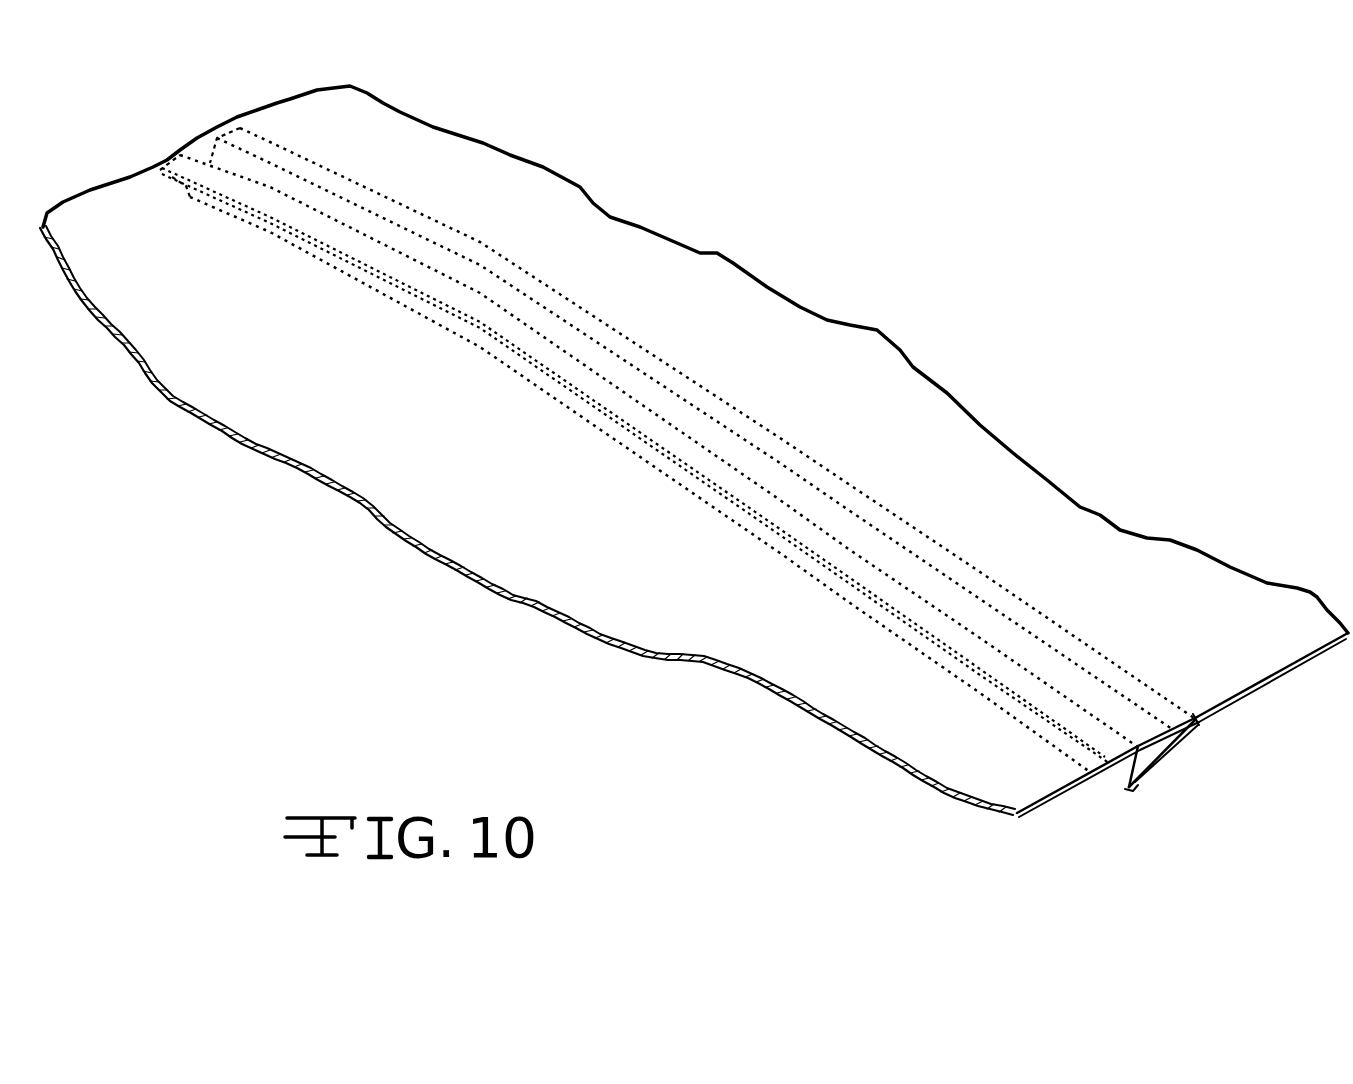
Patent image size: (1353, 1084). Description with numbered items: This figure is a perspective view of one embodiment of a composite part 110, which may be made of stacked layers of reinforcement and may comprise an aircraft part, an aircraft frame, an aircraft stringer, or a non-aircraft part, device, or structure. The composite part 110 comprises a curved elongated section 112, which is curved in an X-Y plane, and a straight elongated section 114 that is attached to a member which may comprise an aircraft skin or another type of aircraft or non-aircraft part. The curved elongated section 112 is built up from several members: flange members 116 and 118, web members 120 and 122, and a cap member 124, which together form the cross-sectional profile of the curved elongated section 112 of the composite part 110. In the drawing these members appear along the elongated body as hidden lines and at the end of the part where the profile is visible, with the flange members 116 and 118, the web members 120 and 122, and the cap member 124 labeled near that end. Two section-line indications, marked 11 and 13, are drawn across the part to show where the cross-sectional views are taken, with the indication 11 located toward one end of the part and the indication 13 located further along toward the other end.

The section line 11- 11 is at (390, 363).
The section line 13- 13 is at (902, 688).
The composite part 110 is at (730, 520).
The curved elongated section 112 is at (583, 297).
The straight elongated section 114 is at (897, 530).
The flange member 116 is at (1080, 717).
The flange member 118 is at (1125, 683).
The web member 120 is at (1125, 773).
The web member 122 is at (1170, 750).
The cap member 124 is at (1135, 786).